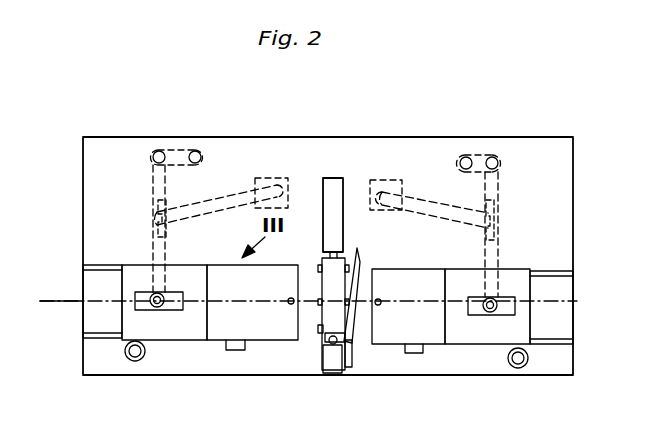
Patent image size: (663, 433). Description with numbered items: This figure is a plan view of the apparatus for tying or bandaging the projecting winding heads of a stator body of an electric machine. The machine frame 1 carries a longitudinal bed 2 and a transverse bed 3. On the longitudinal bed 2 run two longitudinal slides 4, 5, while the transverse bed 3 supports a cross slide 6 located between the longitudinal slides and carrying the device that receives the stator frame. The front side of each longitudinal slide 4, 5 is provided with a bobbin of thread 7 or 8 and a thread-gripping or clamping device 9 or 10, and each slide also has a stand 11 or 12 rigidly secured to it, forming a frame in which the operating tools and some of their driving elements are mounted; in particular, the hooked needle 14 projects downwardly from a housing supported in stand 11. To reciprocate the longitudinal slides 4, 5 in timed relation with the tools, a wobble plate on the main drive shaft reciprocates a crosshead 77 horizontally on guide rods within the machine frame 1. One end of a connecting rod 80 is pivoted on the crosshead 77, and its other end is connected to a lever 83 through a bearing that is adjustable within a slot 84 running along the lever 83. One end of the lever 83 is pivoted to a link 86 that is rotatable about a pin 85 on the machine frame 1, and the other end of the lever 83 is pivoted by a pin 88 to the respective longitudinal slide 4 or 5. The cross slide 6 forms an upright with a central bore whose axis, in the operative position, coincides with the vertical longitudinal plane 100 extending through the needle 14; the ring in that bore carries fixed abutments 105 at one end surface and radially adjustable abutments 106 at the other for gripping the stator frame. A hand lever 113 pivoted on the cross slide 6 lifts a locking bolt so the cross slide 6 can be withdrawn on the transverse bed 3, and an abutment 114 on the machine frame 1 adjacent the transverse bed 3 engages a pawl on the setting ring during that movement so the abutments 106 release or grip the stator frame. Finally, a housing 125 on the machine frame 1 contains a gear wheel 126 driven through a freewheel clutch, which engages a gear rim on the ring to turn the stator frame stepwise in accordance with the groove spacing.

The machine frame 1 is at (102, 150).
The longitudinal bed 2 is at (92, 318).
The transverse bed 3 is at (335, 368).
The longitudinal slide 4 is at (177, 336).
The longitudinal slide 5 is at (488, 333).
The cross slide 6 is at (320, 331).
The bobbin of thread 7 is at (129, 361).
The bobbin of thread 8 is at (520, 368).
The thread-gripping or clamping device 9 is at (235, 350).
The thread-gripping or clamping device 10 is at (420, 353).
The stand 11 is at (280, 330).
The stand 12 is at (387, 337).
The hooked needle 14 is at (289, 298).
The crosshead 77 is at (277, 177).
The connecting rod 80 is at (215, 198).
The lever 83 is at (154, 191).
The slot 84 is at (153, 210).
The pin 85 is at (197, 152).
The link 86 is at (173, 152).
The pin 88 is at (190, 301).
The vertical longitudinal plane 100 is at (83, 300).
The abutments 105 is at (318, 300).
The abutments 106 is at (355, 260).
The hand lever 113 is at (330, 323).
The abutment 114 is at (353, 360).
The housing 125 is at (335, 183).
The gear wheel 126 is at (319, 264).